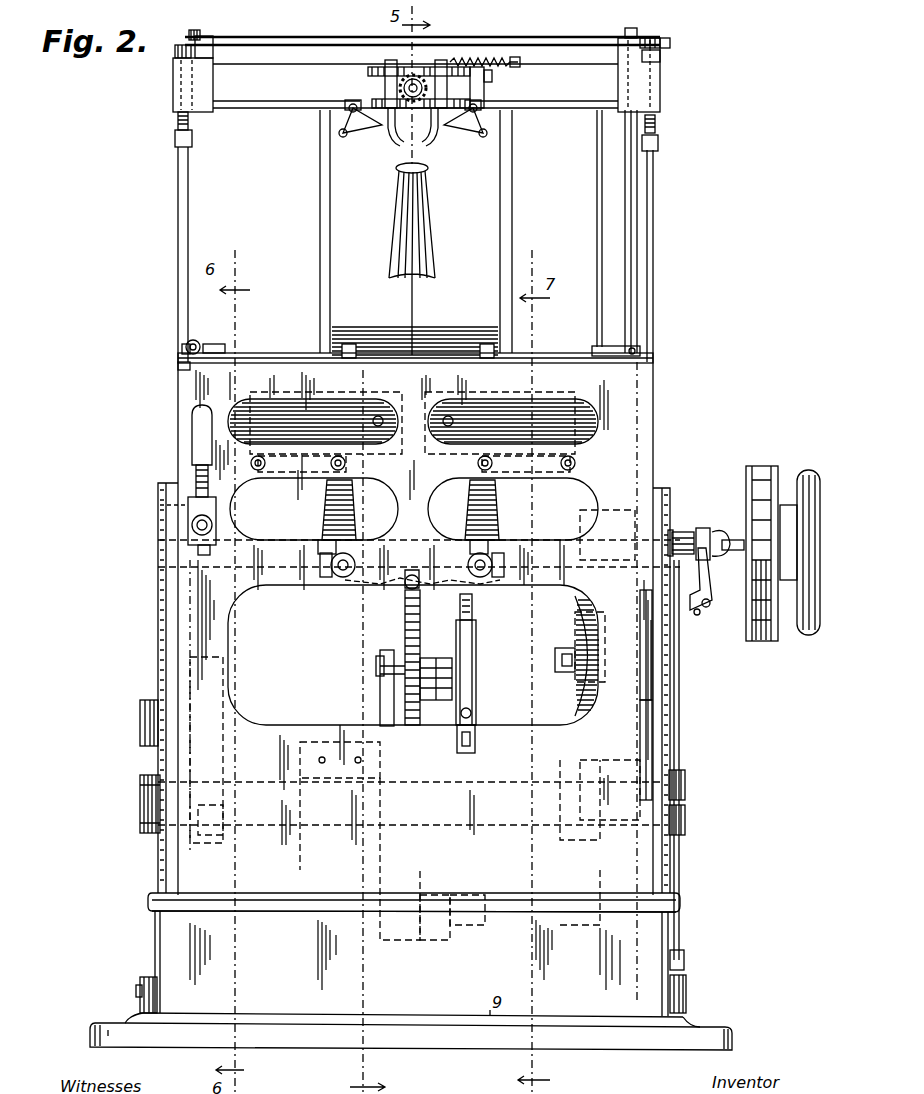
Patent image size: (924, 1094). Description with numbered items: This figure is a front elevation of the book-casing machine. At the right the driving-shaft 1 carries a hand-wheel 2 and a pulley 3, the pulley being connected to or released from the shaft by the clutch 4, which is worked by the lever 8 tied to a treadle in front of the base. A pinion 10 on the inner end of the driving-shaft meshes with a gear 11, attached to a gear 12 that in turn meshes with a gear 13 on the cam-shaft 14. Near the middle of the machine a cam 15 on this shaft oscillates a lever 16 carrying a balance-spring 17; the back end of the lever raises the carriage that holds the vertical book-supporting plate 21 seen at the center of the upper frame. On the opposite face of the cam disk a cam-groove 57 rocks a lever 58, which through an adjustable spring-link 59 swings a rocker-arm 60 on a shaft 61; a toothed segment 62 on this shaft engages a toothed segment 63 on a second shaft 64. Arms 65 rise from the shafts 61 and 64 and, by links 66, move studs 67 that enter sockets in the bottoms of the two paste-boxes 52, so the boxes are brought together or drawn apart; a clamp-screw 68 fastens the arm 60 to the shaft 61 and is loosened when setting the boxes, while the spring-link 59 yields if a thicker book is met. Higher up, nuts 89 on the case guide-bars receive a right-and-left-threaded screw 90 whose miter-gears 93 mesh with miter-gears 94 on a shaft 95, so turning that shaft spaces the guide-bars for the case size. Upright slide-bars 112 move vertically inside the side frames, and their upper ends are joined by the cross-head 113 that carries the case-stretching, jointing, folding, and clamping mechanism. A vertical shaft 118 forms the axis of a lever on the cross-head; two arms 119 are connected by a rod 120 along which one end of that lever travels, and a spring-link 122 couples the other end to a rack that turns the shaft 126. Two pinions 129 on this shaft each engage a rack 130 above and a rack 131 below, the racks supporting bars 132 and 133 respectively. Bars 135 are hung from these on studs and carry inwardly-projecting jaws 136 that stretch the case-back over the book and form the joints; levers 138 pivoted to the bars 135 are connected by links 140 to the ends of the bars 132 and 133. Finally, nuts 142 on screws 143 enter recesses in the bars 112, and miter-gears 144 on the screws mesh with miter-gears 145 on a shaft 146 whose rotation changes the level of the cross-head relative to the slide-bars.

The driving-shaft 1 is at (680, 530).
The hand-wheel 2 is at (806, 470).
The pulley 3 is at (768, 465).
The clutch 4 is at (712, 528).
The lever 8 is at (700, 618).
The pinion 10 is at (500, 536).
The gear 11 is at (575, 612).
The gear 12 is at (652, 657).
The gear 13 is at (654, 720).
The cam-shaft 14 is at (550, 838).
The cam 15 is at (420, 932).
The lever 16 is at (380, 688).
The balance-spring 17 is at (382, 712).
The book-supporting plate 21 is at (414, 298).
The paste-box 52 is at (276, 410).
The cam-groove 57 is at (470, 924).
The lever 58 is at (466, 753).
The spring-link 59 is at (476, 660).
The rocker-arm 60 is at (430, 570).
The shaft 61 is at (334, 578).
The toothed segment 62 is at (403, 585).
The toothed segment 63 is at (420, 592).
The shaft 64 is at (484, 578).
The arms 65 is at (326, 514).
The links 66 is at (276, 478).
The studs 67 is at (250, 460).
The clamp-screw 68 is at (318, 546).
The nuts 89 is at (350, 344).
The screw 90 is at (250, 356).
The miter-gears 93 is at (200, 345).
The miter-gears 94 is at (182, 350).
The shaft 95 is at (178, 366).
The slide-bars 112 is at (176, 268).
The cross-head 113 is at (379, 97).
The vertical shaft 118 is at (638, 226).
The arms 119 is at (592, 348).
The rod 120 is at (596, 230).
The spring-link 122 is at (518, 62).
The shaft 126 is at (395, 72).
The pinions 129 is at (418, 74).
The rack 130 is at (368, 70).
The rack 131 is at (484, 82).
The bar 132 is at (484, 88).
The bar 133 is at (350, 110).
The bars 135 is at (386, 144).
The jaws 136 is at (400, 172).
The lever 138 is at (340, 136).
The link 140 is at (372, 98).
The nuts 142 is at (175, 140).
The screws 143 is at (178, 124).
The miter-gears 144 is at (176, 56).
The miter-gears 145 is at (200, 36).
The shaft 146 is at (213, 82).